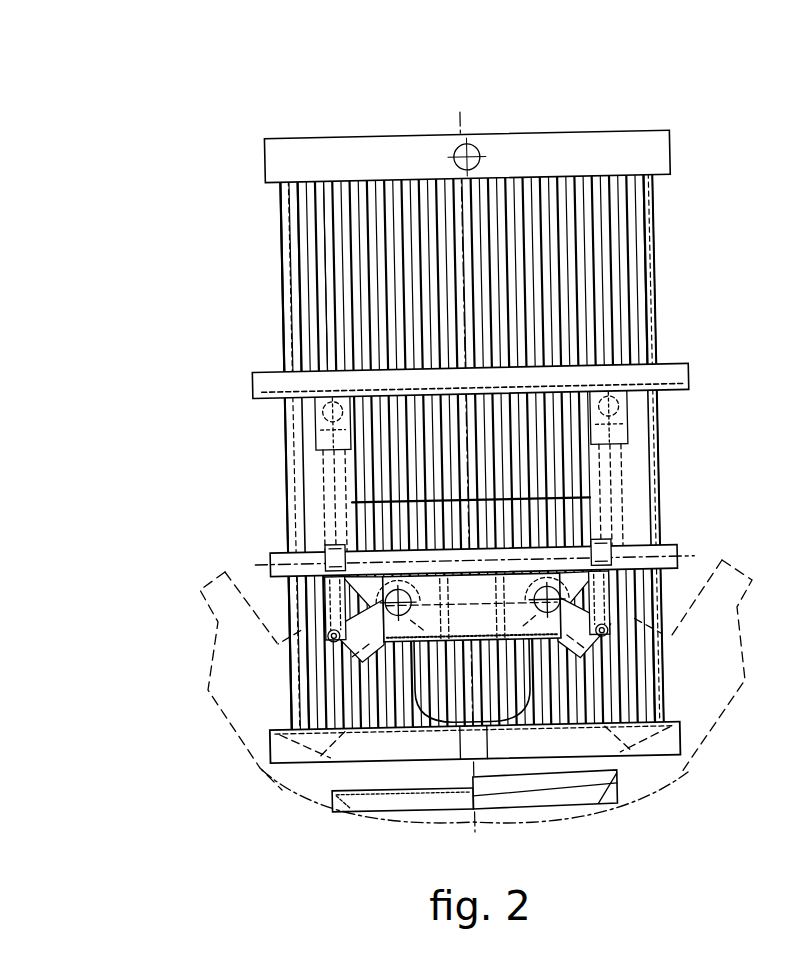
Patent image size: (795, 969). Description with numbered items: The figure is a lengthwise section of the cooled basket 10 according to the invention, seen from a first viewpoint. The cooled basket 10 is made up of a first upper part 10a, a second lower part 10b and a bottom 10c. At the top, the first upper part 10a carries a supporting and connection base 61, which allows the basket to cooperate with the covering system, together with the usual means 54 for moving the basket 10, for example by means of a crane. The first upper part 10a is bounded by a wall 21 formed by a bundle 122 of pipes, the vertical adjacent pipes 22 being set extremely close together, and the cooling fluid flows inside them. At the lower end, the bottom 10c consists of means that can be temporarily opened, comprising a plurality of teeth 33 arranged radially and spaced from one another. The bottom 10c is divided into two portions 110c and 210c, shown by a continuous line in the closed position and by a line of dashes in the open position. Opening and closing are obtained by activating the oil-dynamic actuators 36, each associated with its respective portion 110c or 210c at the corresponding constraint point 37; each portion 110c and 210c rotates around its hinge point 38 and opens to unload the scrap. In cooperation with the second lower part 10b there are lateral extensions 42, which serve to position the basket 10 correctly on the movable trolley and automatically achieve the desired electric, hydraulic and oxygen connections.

The cooled basket 10 is at (352, 106).
The first upper part 10a is at (670, 298).
The second lower part 10b is at (690, 545).
The bottom 10c is at (398, 853).
The wall 21 is at (653, 234).
The pipes 22 is at (367, 234).
The bundle 122 is at (325, 210).
The teeth 33 is at (533, 793).
The oil-dynamic actuators 36 is at (330, 470).
The constraint point 37 is at (305, 617).
The hinge point 38 is at (350, 543).
The lateral extensions 42 is at (410, 625).
The means to move the basket 54 is at (472, 152).
The supporting and connection base 61 is at (418, 128).
The first portion of the bottom 110c is at (248, 780).
The second portion of the bottom 210c is at (698, 778).